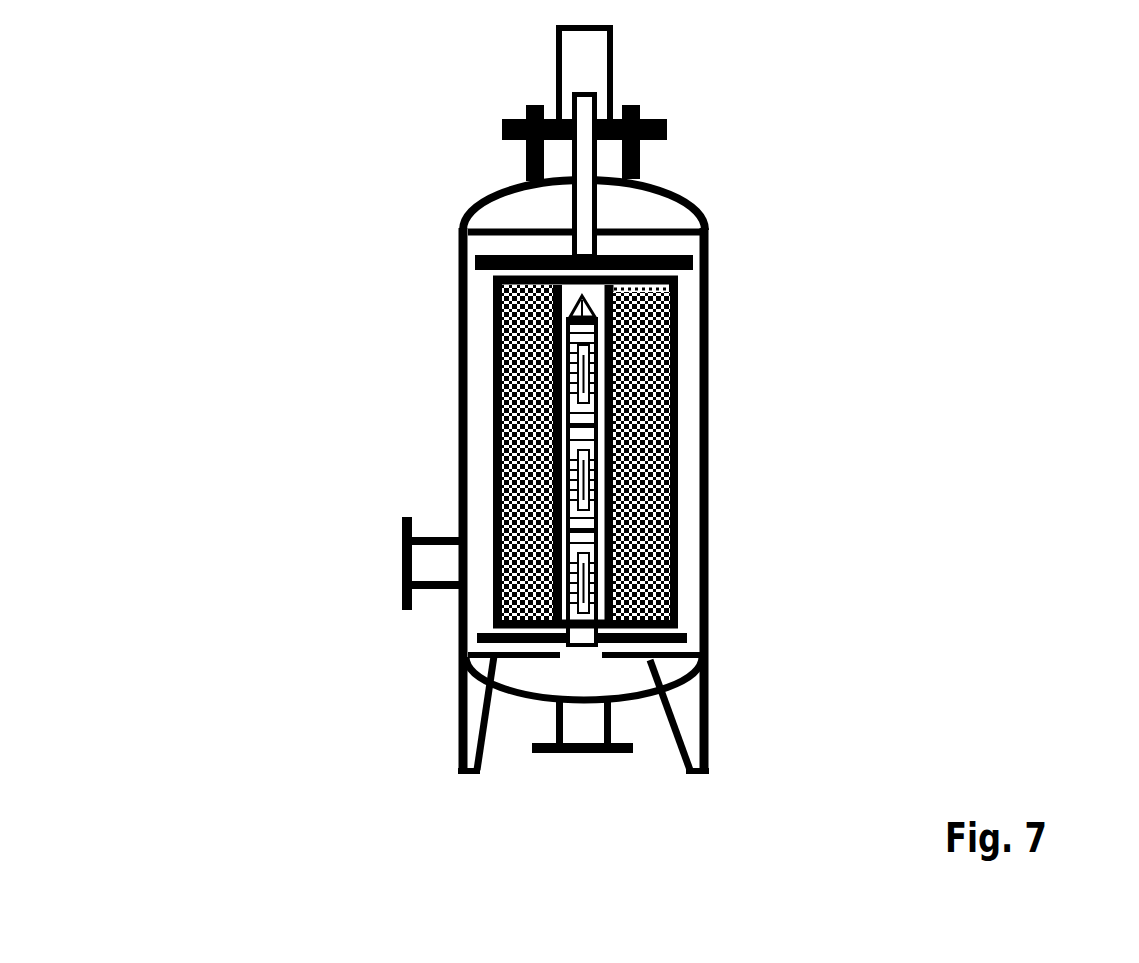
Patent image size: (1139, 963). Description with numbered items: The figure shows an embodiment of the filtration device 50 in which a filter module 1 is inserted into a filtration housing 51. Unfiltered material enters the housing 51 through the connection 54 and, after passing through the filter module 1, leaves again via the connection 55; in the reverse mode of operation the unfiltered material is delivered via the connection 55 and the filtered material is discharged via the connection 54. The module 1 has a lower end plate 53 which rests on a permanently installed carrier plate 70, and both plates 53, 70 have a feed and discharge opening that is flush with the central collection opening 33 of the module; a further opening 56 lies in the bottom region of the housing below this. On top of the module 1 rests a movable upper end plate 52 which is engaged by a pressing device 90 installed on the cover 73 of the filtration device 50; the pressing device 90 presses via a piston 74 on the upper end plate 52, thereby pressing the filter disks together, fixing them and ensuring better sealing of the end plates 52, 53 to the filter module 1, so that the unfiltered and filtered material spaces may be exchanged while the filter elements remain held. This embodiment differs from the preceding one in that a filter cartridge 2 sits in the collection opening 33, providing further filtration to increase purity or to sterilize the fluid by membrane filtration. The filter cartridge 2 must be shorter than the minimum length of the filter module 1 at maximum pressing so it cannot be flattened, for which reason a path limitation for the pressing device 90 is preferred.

The filter module 1 is at (653, 533).
The filter cartridge 2 is at (583, 342).
The collection opening 33 is at (592, 291).
The filtration device 50 is at (878, 385).
The filtration housing 51 is at (705, 280).
The upper end plate 52 is at (627, 257).
The lower end plate 53 is at (690, 636).
The connection 54 is at (403, 558).
The connection 55 is at (598, 743).
The bottom opening / collecting space 56 is at (587, 648).
The carrier plate 70 is at (660, 672).
The cover 73 is at (672, 192).
The piston 74 is at (583, 205).
The pressing device 90 is at (595, 54).